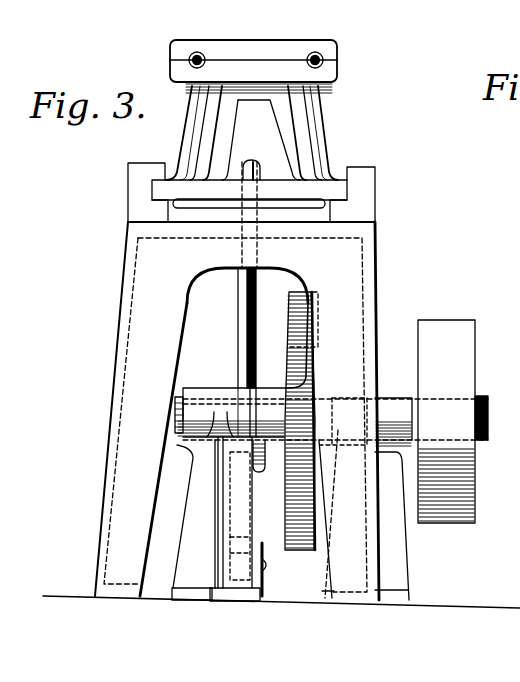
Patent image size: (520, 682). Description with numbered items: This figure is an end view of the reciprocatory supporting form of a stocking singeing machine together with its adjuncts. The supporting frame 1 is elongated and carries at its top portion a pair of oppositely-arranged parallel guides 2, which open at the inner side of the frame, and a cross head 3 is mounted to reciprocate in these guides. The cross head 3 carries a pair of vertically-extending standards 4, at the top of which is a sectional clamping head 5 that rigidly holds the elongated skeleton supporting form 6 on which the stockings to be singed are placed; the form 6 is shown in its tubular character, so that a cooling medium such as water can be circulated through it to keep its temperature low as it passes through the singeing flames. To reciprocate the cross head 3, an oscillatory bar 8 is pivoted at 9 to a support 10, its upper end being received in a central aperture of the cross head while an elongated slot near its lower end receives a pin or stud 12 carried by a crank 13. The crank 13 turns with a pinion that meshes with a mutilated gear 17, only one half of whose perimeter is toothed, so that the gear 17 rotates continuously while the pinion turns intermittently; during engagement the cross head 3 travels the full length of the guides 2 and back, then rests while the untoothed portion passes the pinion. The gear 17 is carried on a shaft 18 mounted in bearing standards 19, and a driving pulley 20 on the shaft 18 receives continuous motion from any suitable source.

The supporting frame 1 is at (253, 411).
The guides 2 is at (136, 199).
The cross head 3 is at (249, 194).
The standards 4 is at (283, 133).
The sectional clamping head 5 is at (258, 47).
The skeleton supporting form 6 is at (198, 52).
The oscillatory bar 8 is at (244, 296).
The pivot 9 is at (270, 567).
The support 10 is at (262, 544).
The pin or stud 12 is at (233, 457).
The crank 13 is at (267, 469).
The mutilated gear 17 is at (298, 351).
The shaft 18 is at (182, 419).
The bearing standards 19 is at (193, 506).
The driving pulley 20 is at (453, 421).